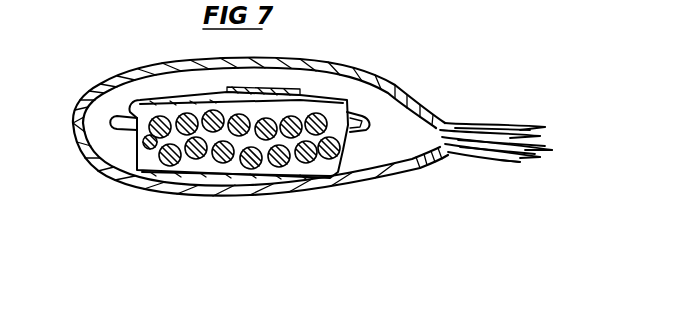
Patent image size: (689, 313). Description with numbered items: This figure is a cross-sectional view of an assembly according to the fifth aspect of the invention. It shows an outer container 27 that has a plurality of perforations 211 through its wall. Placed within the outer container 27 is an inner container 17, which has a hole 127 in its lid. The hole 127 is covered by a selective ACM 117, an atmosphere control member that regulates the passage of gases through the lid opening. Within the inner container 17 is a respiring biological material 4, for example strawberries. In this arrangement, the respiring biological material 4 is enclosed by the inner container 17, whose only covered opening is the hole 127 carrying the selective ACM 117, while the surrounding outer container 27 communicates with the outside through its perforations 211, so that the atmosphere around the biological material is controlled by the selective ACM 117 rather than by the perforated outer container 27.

The inner container 17 is at (250, 143).
The selective ACM 117 is at (300, 87).
The hole 127 is at (365, 112).
The respiring biological material 4 is at (237, 190).
The outer container 27 is at (420, 167).
The perforations 211 is at (192, 62).